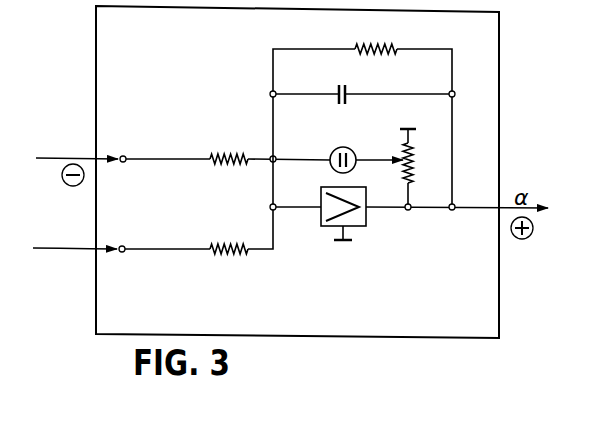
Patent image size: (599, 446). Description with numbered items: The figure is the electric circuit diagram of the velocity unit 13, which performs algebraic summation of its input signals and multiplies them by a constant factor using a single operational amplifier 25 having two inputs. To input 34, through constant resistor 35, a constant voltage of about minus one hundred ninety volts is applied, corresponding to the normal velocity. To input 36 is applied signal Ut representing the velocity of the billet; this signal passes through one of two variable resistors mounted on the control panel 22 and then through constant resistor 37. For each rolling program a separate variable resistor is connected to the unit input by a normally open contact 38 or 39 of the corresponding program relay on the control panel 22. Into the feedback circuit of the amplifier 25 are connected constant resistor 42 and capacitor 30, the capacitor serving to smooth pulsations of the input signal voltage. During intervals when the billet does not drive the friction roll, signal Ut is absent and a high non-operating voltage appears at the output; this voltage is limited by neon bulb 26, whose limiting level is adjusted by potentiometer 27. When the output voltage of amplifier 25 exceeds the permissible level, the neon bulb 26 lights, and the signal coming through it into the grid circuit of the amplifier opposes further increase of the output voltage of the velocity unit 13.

The velocity unit 13 is at (492, 270).
The control panel 22 is at (83, 263).
The operational amplifier 25 is at (358, 219).
The neon bulb 26 is at (354, 152).
The potentiometer 27 is at (419, 168).
The capacitor 30 is at (362, 84).
The input 34 is at (82, 144).
The constant resistor 35 is at (229, 146).
The input 36 is at (116, 238).
The constant resistor 37 is at (229, 239).
The normally open contact 38 is at (49, 236).
The normally open contact 39 is at (75, 236).
The constant resistor 42 is at (376, 37).